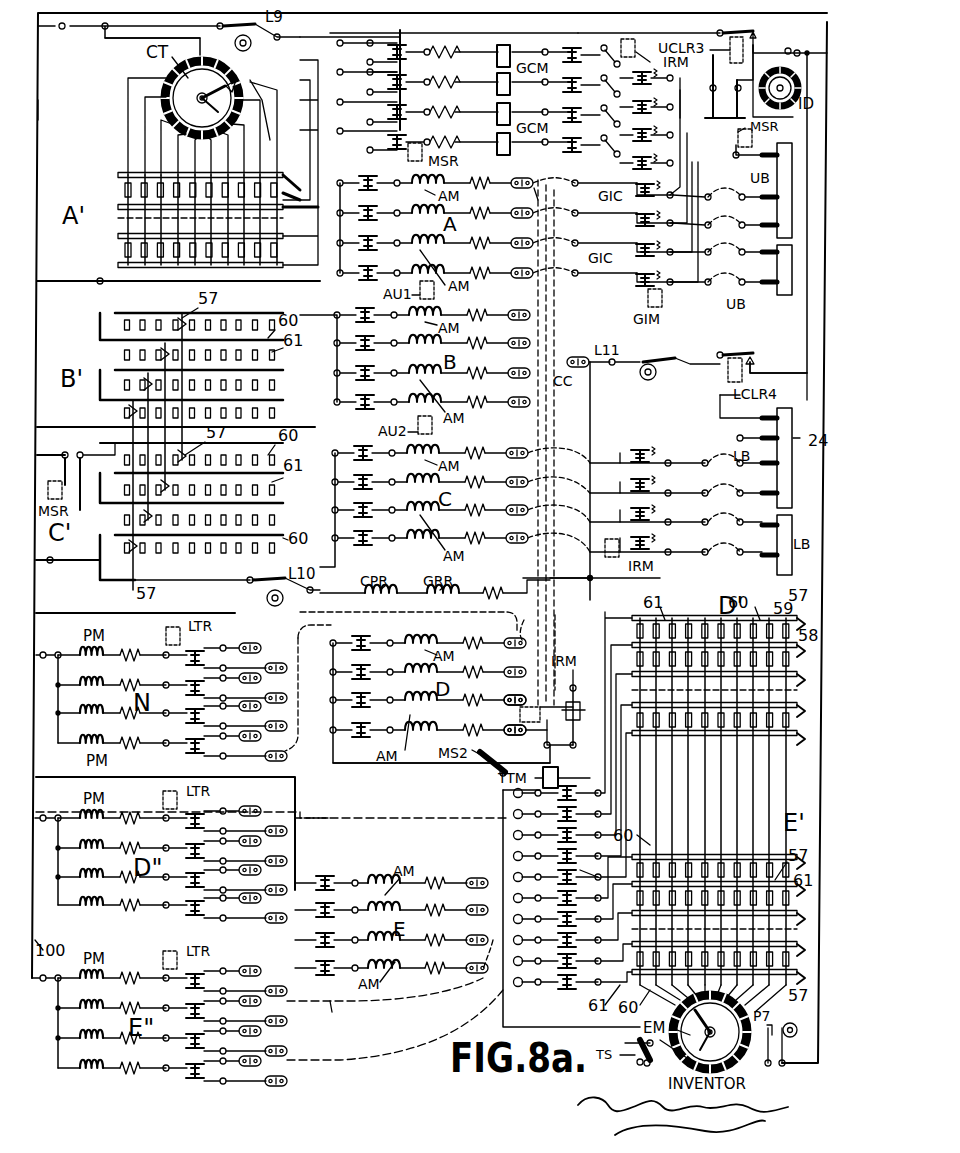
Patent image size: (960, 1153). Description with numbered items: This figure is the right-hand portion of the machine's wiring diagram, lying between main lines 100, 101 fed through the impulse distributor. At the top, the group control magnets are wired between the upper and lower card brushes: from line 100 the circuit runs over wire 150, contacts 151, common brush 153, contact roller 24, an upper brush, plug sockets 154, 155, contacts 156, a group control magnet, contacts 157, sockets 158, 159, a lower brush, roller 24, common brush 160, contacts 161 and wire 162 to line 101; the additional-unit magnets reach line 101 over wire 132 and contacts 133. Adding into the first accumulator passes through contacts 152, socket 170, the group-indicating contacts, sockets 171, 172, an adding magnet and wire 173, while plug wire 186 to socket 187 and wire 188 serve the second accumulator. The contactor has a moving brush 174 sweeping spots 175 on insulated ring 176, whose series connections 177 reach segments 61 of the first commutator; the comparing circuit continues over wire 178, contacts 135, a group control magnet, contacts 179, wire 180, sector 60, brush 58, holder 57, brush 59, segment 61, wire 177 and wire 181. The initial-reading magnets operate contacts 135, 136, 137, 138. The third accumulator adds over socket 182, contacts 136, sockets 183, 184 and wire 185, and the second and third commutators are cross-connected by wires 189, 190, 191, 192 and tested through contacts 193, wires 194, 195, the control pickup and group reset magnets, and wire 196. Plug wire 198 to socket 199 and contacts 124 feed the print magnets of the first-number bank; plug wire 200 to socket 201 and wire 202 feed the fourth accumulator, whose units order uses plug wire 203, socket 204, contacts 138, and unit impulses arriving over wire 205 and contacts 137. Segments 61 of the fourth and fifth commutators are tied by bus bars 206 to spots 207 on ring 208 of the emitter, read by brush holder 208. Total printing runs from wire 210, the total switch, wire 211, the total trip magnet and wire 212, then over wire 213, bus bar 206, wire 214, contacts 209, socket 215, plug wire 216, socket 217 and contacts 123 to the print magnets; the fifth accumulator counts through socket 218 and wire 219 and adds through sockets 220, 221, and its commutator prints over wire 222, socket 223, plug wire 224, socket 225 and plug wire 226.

The main line 100 is at (37, 112).
The line 101 is at (825, 383).
The contacts 123 is at (205, 650).
The contacts 124 is at (182, 662).
The wire 132 is at (578, 33).
The contacts 133 is at (760, 35).
The contacts 135 is at (647, 119).
The contacts 136 is at (660, 490).
The contacts 137 is at (585, 716).
The contacts 138 is at (548, 704).
The wire 150 is at (455, 38).
The contacts 151 is at (705, 115).
The contacts 152 is at (731, 81).
The common brush 153 is at (755, 161).
The plug socket 154 is at (735, 190).
The plug socket 155 is at (606, 48).
The contacts 156 is at (591, 79).
The contacts 157 is at (400, 40).
The plug socket 158 is at (335, 42).
The socket 159 is at (747, 518).
The common brush 160 is at (794, 490).
The contacts 161 is at (756, 354).
The wire 162 is at (807, 337).
The socket 170 is at (725, 235).
The plug socket 171 is at (575, 183).
The socket 172 is at (523, 178).
The wire 173 is at (108, 285).
The moving brush 174 is at (215, 112).
The spots 175 is at (245, 86).
The insulated ring 176 is at (225, 68).
The series connections 177 is at (262, 140).
The wire 178 is at (693, 175).
The contacts 179 is at (408, 58).
The wire 180 is at (335, 62).
The wire 181 is at (130, 38).
The socket 182 is at (694, 517).
The plug socket 183 is at (575, 458).
The socket 184 is at (520, 450).
The wire 185 is at (68, 572).
The plug wire 186 is at (560, 290).
The socket 187 is at (538, 300).
The wire 188 is at (183, 416).
The wire 189 is at (205, 320).
The wire 190 is at (130, 355).
The wire 191 is at (115, 445).
The wire 192 is at (125, 462).
The contacts 193 is at (125, 522).
The wire 194 is at (100, 322).
The wire 195 is at (108, 583).
The wire 196 is at (603, 585).
The plug wire 198 is at (400, 615).
The socket 199 is at (302, 706).
The plug wire 200 is at (572, 652).
The socket 201 is at (520, 625).
The wire 202 is at (235, 613).
The plug wire 203 is at (535, 685).
The socket 204 is at (520, 730).
The wire 205 is at (590, 431).
The bus bar 206 is at (770, 790).
The spots 207 is at (710, 1032).
The brush holder 208 is at (665, 1082).
The contacts 209 is at (576, 830).
The wire 210 is at (645, 1065).
The wire 211 is at (503, 1018).
The wire 212 is at (420, 763).
The wire 213 is at (645, 1040).
The wire 214 is at (620, 744).
The socket 215 is at (515, 797).
The plug wire 216 is at (360, 820).
The socket 217 is at (285, 810).
The socket 218 is at (490, 892).
The wire 219 is at (295, 845).
The socket 220 is at (740, 436).
The socket 221 is at (490, 965).
The wire 222 is at (588, 861).
The socket 223 is at (510, 940).
The plug wire 224 is at (348, 1018).
The socket 225 is at (268, 1005).
The plug wire 226 is at (350, 1057).
The brush holder 57 is at (315, 186).
The brush 58 is at (292, 168).
The brush 59 is at (296, 200).
The sector 60 is at (118, 175).
The segments 61 is at (125, 190).
The contact roller 24 is at (787, 230).